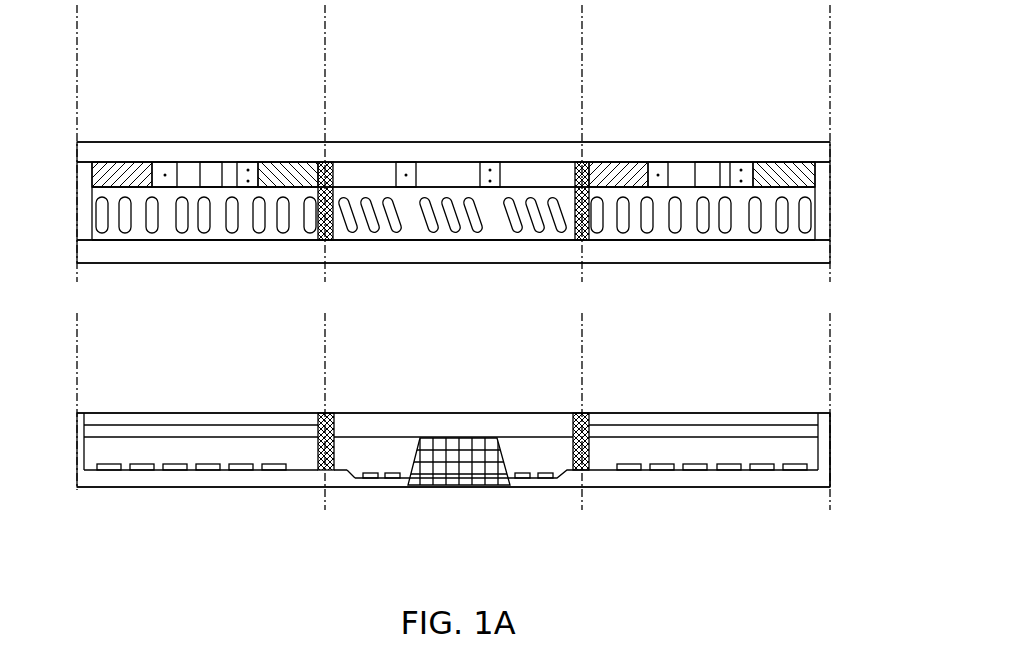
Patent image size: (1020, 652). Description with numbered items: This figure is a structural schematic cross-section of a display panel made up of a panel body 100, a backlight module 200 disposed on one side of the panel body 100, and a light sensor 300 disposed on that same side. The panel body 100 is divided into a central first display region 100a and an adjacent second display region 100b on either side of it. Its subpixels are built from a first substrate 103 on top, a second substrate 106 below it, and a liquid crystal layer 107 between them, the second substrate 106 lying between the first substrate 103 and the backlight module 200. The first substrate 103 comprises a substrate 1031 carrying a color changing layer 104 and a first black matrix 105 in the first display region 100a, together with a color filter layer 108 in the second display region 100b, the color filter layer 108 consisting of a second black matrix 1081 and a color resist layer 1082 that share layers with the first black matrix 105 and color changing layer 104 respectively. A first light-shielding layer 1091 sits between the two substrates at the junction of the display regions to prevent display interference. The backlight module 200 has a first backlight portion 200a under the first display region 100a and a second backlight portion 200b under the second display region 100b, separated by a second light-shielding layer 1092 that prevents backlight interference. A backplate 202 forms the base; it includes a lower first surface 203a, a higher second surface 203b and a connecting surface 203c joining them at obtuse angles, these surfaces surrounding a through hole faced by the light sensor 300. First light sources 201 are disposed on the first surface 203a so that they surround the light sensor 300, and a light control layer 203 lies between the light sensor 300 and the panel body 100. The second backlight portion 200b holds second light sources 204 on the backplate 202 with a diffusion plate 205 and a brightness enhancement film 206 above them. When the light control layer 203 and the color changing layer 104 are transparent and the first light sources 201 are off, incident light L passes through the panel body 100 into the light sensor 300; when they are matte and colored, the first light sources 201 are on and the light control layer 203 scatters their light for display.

The panel body 100 is at (68, 142).
The first display region 100a is at (581, 35).
The second display region 100b is at (324, 35).
The first substrate 103 is at (453, 120).
The substrate 1031 is at (803, 152).
The color changing layer 104 is at (368, 175).
The first black matrix 105 is at (453, 138).
The second substrate 106 is at (803, 250).
The liquid crystal layer 107 is at (803, 207).
The color filter layer 108 is at (453, 135).
The second black matrix 1081 is at (495, 150).
The color resist layer 1082 is at (203, 180).
The first light-shielding layer 1091 is at (583, 163).
The incident light L is at (535, 141).
The backlight module 200 is at (68, 413).
The first backlight portion 200a is at (581, 333).
The second backlight portion 200b is at (324, 333).
The first light sources 201 is at (525, 485).
The backplate 202 is at (808, 477).
The light control layer 203 is at (462, 420).
The first surface 203a is at (382, 481).
The second surface 203b is at (337, 473).
The connecting surface 203c is at (349, 476).
The second light sources 204 is at (725, 470).
The diffusion plate 205 is at (260, 430).
The brightness enhancement film 206 is at (192, 424).
The light sensor 300 is at (463, 487).
The second light-shielding layer 1092 is at (330, 413).